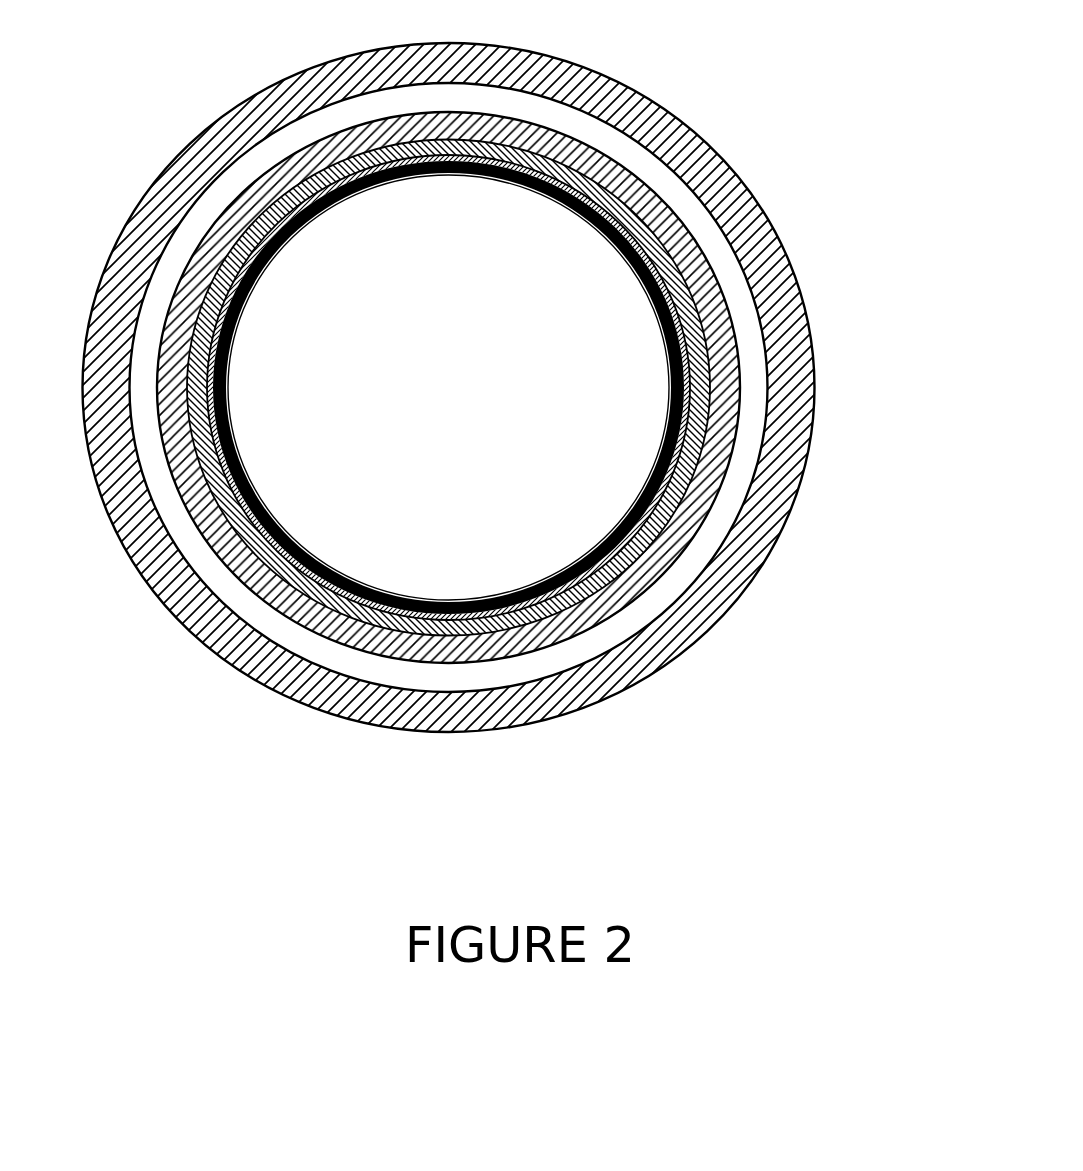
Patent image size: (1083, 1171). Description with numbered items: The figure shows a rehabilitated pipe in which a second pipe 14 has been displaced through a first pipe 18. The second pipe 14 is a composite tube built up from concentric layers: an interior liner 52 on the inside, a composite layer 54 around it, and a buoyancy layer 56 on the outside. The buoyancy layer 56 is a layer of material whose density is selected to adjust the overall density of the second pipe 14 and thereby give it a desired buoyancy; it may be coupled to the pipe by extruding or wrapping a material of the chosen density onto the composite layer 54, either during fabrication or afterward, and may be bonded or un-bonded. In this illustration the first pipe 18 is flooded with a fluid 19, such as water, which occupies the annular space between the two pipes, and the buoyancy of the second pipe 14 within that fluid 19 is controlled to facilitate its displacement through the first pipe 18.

The first pipe 18 is at (792, 192).
The fluid 19 is at (763, 378).
The buoyancy layer 56 is at (718, 305).
The composite layer 54 is at (708, 405).
The interior liner 52 is at (686, 499).
The second pipe 14 is at (614, 613).